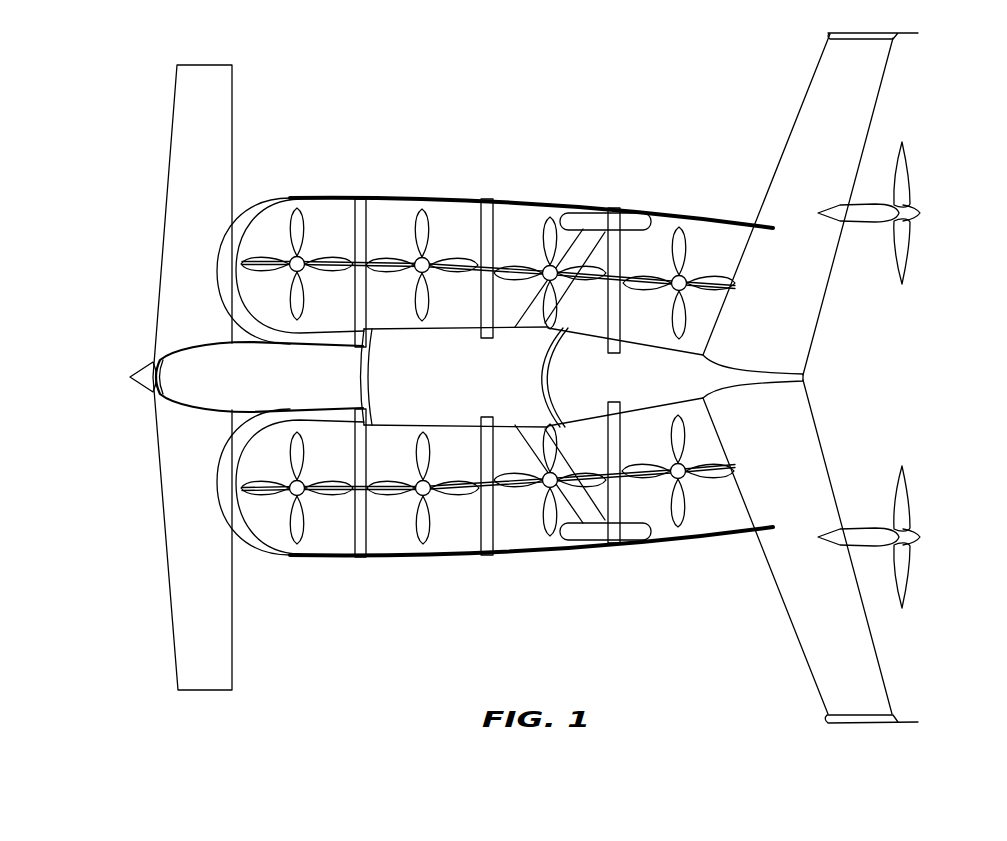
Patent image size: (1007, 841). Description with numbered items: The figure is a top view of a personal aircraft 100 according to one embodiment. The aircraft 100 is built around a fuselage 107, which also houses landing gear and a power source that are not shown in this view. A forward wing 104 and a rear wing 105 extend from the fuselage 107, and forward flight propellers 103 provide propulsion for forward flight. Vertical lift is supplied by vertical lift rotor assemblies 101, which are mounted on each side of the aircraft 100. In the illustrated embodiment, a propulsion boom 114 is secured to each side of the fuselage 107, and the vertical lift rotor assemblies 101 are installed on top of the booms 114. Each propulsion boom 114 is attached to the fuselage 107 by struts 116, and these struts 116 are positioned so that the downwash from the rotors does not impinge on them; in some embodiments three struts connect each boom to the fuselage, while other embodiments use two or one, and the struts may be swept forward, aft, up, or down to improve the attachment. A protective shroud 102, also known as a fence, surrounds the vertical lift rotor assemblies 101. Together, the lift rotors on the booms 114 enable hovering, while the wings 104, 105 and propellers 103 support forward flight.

The personal aircraft 100 is at (518, 47).
The vertical lift rotor assembly 101 is at (297, 545).
The protective shroud 102 is at (532, 198).
The forward flight propeller 103 is at (907, 264).
The forward wing 104 is at (149, 218).
The rear wing 105 is at (877, 720).
The fuselage 107 is at (125, 377).
The propulsion boom 114 is at (722, 487).
The strut 116 is at (352, 229).